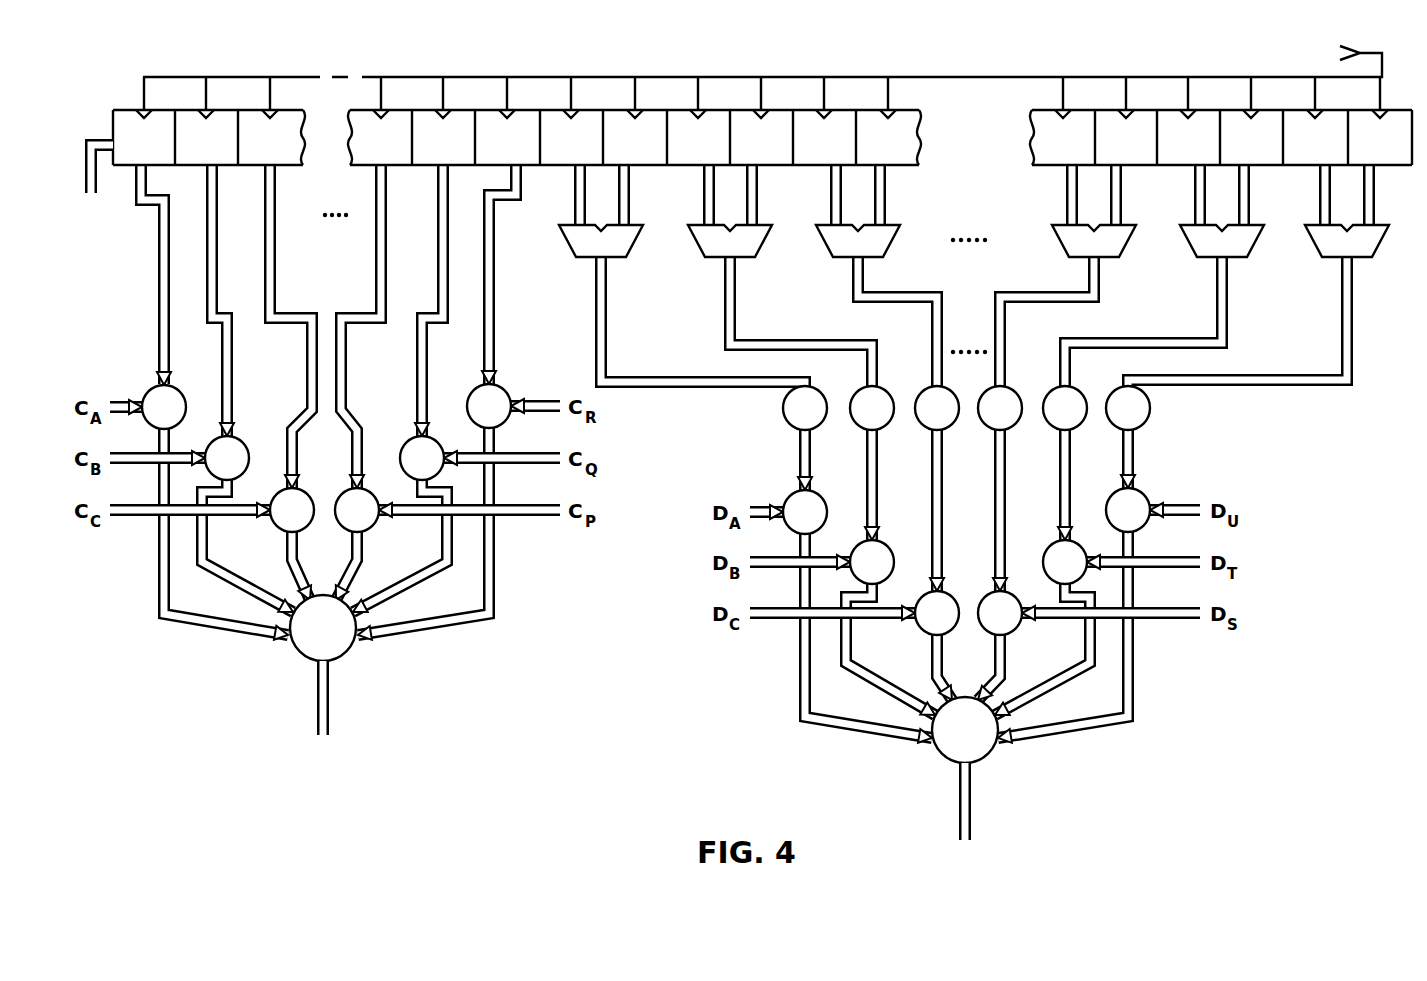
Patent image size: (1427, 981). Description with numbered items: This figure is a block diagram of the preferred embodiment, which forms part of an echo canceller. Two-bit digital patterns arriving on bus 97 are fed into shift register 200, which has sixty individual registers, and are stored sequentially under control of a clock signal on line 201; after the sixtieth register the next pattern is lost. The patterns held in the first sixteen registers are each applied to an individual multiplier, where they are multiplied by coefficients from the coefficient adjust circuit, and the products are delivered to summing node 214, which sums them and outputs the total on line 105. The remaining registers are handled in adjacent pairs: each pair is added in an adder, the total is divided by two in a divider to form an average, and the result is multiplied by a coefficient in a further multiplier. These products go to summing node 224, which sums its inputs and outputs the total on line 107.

The shift register 200 is at (113, 115).
The bus 97 is at (82, 178).
The line 201 is at (1382, 55).
The summing node 214 is at (311, 659).
The line 105 is at (328, 715).
The summing node 224 is at (955, 762).
The line 107 is at (970, 818).